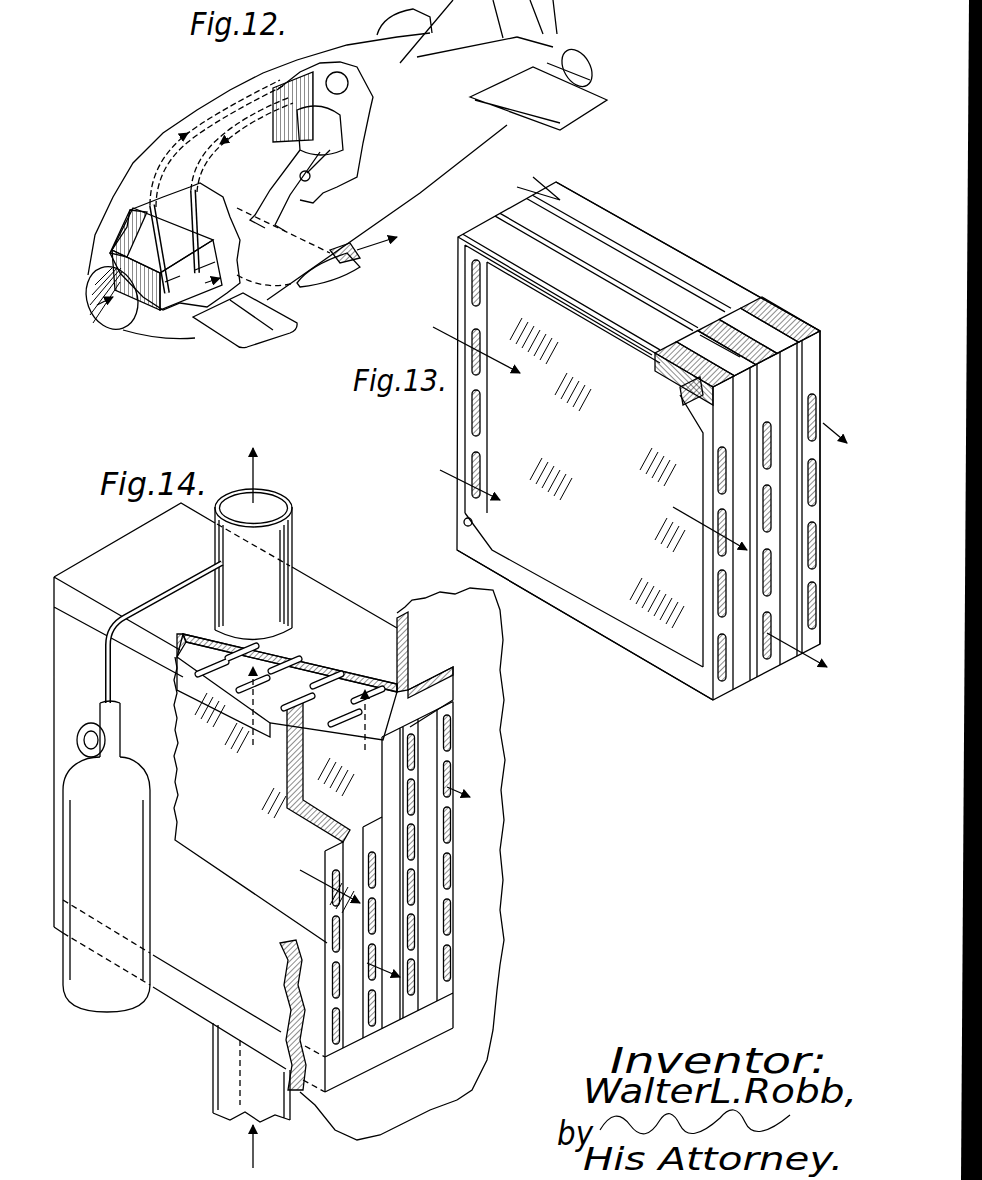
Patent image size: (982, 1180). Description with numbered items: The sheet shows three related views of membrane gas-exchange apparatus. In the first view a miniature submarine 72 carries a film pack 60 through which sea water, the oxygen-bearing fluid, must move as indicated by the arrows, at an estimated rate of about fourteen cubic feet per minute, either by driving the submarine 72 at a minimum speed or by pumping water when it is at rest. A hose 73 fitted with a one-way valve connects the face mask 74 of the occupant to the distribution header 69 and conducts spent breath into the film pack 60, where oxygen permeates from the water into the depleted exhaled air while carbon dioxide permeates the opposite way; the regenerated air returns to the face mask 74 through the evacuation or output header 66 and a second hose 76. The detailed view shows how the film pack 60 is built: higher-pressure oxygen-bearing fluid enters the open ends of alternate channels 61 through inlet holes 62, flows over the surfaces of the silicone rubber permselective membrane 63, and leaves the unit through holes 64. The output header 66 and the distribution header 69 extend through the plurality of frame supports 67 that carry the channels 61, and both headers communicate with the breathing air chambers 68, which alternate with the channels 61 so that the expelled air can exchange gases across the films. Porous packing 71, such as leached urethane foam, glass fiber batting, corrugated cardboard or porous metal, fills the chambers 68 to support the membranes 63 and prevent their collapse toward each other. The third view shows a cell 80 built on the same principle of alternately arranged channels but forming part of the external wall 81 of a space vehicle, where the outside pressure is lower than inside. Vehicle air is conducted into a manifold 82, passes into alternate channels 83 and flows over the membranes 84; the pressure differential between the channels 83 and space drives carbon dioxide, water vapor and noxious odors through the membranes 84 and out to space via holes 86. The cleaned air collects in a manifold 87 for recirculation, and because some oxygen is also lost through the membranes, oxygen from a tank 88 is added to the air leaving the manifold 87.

In FIG. 12, the film pack 60 is at (166, 259).
In FIG. 13, the film pack 60 is at (640, 228).
In FIG. 13, the channels 61 is at (747, 332).
In FIG. 13, the inlet holes 62 is at (812, 540).
In FIG. 13, the silicone rubber permselective membrane 63 is at (645, 252).
In FIG. 13, the holes 64 is at (480, 470).
In FIG. 12, the output header 66 is at (167, 289).
In FIG. 13, the output header 66 is at (463, 524).
In FIG. 13, the frame supports 67 is at (810, 368).
In FIG. 13, the breathing air chambers 68 is at (763, 338).
In FIG. 12, the distribution header 69 is at (199, 278).
In FIG. 13, the distribution header 69 is at (803, 335).
In FIG. 13, the porous packing 71 is at (750, 332).
In FIG. 12, the submarine 72 is at (158, 138).
In FIG. 12, the hose 73 is at (237, 117).
In FIG. 12, the face mask 74 is at (295, 80).
In FIG. 12, the hose 76 is at (208, 123).
In FIG. 14, the cell 80 is at (317, 577).
In FIG. 14, the external wall 81 is at (487, 845).
In FIG. 14, the manifold 82 is at (187, 990).
In FIG. 14, the channels 83 is at (388, 783).
In FIG. 14, the membranes 84 is at (378, 687).
In FIG. 14, the holes 86 is at (447, 873).
In FIG. 14, the manifold 87 is at (450, 688).
In FIG. 14, the tank 88 is at (142, 787).